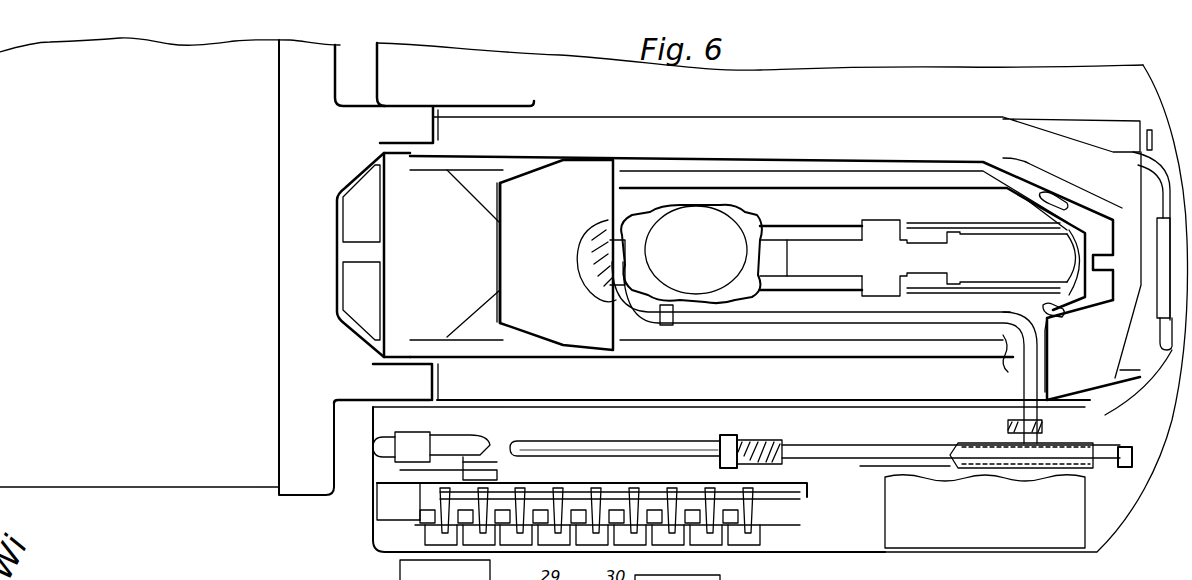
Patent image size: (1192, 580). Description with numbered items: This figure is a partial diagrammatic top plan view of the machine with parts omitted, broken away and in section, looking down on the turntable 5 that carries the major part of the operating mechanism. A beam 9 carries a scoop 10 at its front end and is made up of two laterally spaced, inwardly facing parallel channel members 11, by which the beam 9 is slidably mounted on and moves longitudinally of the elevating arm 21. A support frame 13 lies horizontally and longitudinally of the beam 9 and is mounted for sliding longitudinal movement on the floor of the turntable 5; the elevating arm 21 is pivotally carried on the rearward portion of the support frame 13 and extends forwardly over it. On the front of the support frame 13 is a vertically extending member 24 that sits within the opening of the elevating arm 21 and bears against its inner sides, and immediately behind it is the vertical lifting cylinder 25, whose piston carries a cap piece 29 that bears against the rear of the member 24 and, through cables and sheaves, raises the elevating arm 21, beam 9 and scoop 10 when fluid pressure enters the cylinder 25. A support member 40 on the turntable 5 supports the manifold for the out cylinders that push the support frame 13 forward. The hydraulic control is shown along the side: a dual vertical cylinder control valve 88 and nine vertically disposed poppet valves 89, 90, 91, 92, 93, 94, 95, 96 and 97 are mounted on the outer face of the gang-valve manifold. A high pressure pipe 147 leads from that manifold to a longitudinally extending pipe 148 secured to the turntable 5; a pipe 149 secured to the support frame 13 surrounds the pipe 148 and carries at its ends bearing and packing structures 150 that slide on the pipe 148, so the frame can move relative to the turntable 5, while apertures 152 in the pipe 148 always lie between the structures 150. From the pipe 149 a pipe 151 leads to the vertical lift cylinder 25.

The turntable 5 is at (1150, 300).
The beam 9 is at (307, 497).
The scoop 10 is at (190, 488).
The channel members 11 is at (1097, 110).
The support frame 13 is at (878, 348).
The elevating arm 21 is at (848, 118).
The vertically extending member 24 is at (473, 190).
The vertical lifting cylinder 25 is at (668, 212).
The cap piece 29 is at (560, 172).
The support member 40 is at (1150, 456).
The dual vertical cylinder control valve 88 is at (425, 533).
The poppet valve 89 is at (483, 542).
The poppet valve 90 is at (523, 542).
The poppet valve 91 is at (567, 542).
The poppet valve 92 is at (610, 542).
The poppet valve 93 is at (650, 542).
The poppet valve 94 is at (688, 542).
The poppet valve 95 is at (727, 542).
The poppet valve 96 is at (760, 547).
The poppet valve 97 is at (807, 538).
The high pressure pipe 147 is at (497, 462).
The longitudinally extending pipe 148 is at (625, 447).
The pipe 149 is at (803, 443).
The bearing and packing structures 150 is at (727, 435).
The pipe 151 is at (1023, 380).
The apertures 152 is at (750, 447).